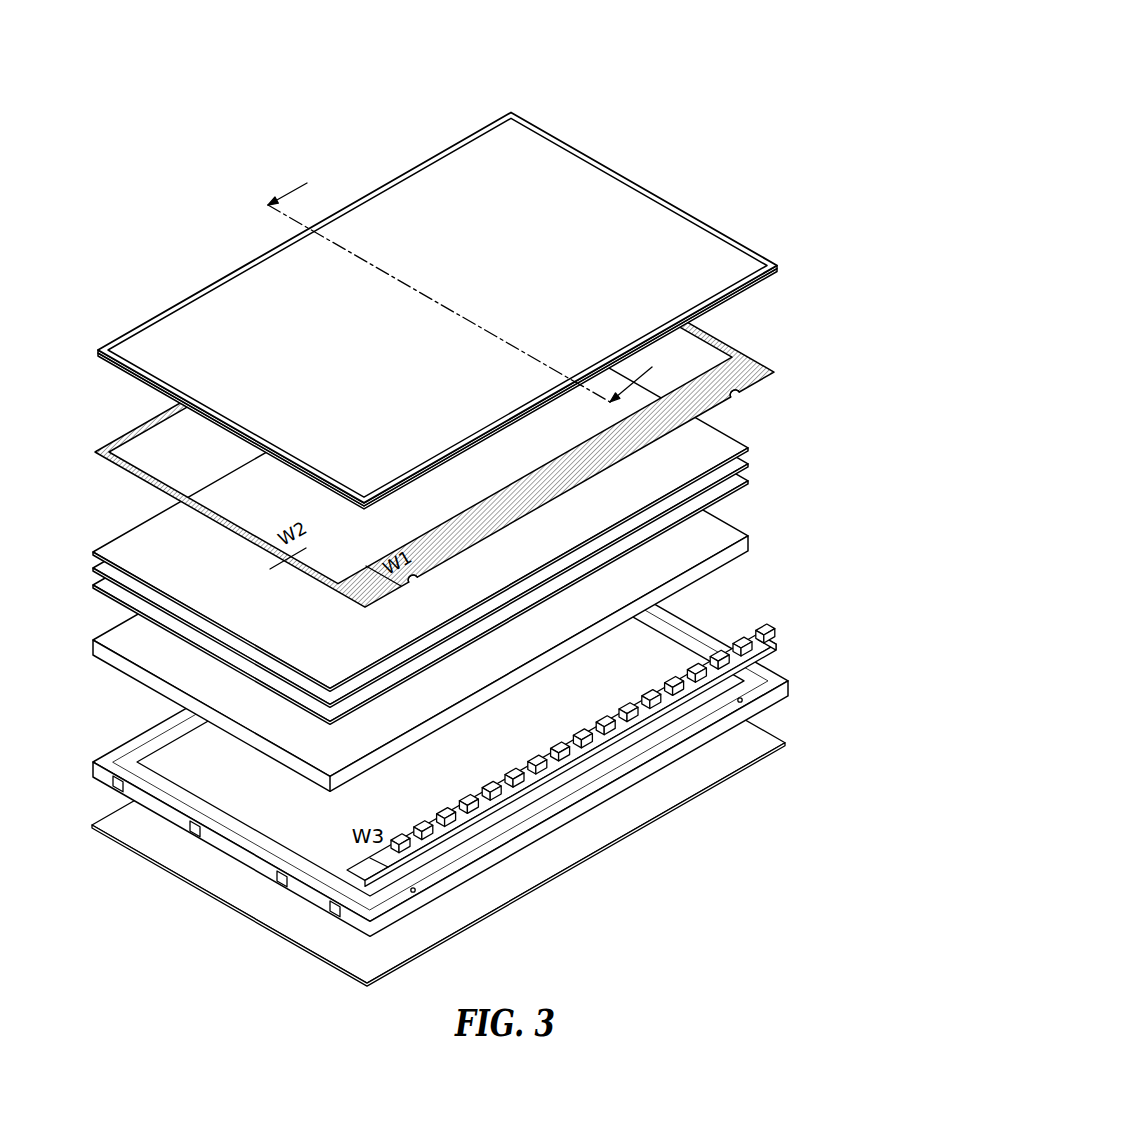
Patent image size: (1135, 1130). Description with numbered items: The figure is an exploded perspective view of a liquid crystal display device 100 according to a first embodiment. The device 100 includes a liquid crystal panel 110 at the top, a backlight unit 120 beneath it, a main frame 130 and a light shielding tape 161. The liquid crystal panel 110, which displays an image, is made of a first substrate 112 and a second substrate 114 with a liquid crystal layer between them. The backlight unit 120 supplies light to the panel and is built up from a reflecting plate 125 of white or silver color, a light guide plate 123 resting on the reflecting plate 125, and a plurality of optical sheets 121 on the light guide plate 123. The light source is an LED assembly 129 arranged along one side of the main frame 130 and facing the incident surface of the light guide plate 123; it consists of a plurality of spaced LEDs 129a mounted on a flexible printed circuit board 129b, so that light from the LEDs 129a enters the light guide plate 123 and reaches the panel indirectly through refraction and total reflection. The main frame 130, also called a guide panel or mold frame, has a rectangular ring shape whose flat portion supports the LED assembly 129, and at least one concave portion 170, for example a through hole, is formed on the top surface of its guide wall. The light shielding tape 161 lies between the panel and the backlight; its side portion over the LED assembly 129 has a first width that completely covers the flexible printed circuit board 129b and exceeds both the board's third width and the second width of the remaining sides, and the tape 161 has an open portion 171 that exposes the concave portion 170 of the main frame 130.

The liquid crystal display device 100 is at (510, 493).
The liquid crystal panel 110 is at (510, 311).
The first substrate 112 is at (764, 268).
The second substrate 114 is at (732, 274).
The backlight unit 120 is at (510, 649).
The optical sheets 121 is at (450, 518).
The light guide plate 123 is at (752, 539).
The reflecting plate 125 is at (786, 743).
The LED assembly 129 is at (624, 742).
The LEDs 129a is at (767, 657).
The flexible printed circuit board 129b is at (762, 641).
The main frame 130 is at (432, 729).
The light shielding tape 161 is at (473, 412).
The concave portion 170 is at (741, 703).
The open portion 171 is at (742, 391).